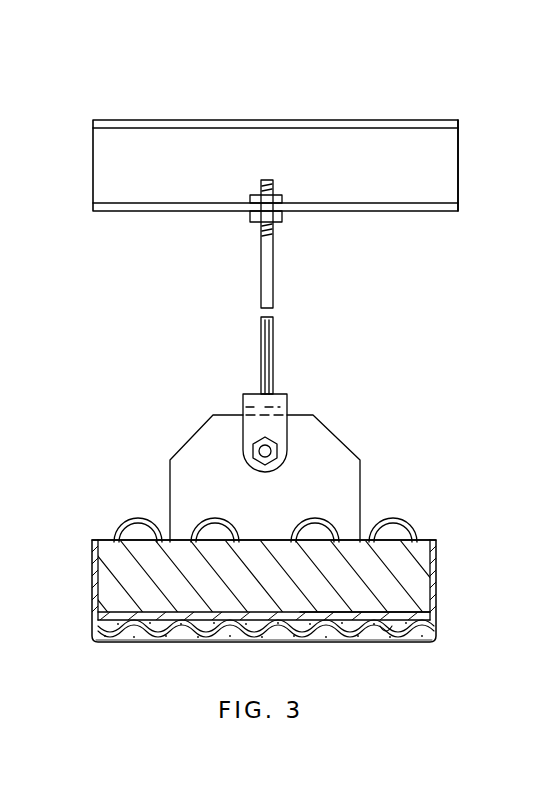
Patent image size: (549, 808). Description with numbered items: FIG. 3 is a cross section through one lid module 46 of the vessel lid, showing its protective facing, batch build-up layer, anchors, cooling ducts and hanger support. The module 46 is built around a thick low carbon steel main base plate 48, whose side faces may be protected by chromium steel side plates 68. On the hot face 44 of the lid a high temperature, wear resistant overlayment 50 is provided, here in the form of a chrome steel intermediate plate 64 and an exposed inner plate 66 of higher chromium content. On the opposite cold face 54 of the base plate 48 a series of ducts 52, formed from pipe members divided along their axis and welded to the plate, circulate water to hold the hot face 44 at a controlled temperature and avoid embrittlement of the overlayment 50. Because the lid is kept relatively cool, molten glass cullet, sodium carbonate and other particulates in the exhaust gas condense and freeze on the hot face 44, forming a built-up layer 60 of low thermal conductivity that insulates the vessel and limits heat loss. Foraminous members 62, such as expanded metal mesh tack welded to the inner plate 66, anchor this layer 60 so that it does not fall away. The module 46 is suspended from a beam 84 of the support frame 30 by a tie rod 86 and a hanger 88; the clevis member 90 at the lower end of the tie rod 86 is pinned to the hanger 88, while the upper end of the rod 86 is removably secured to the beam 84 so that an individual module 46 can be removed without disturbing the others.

The support frame 30 is at (283, 121).
The beam 84 is at (458, 173).
The tie rod 86 is at (273, 269).
The clevis member 90 is at (283, 394).
The hanger 88 is at (331, 432).
The lid module 46 is at (396, 478).
The ducts 52 is at (201, 519).
The main base plate 48 is at (421, 566).
The side plates 68 is at (92, 571).
The exposed inner plate 66 is at (110, 613).
The cold face 54 is at (108, 538).
The hot face 44 is at (168, 641).
The built-up layer 60 is at (305, 641).
The foraminous members 62 is at (247, 641).
The overlayment 50 is at (381, 626).
The intermediate plate 64 is at (316, 612).